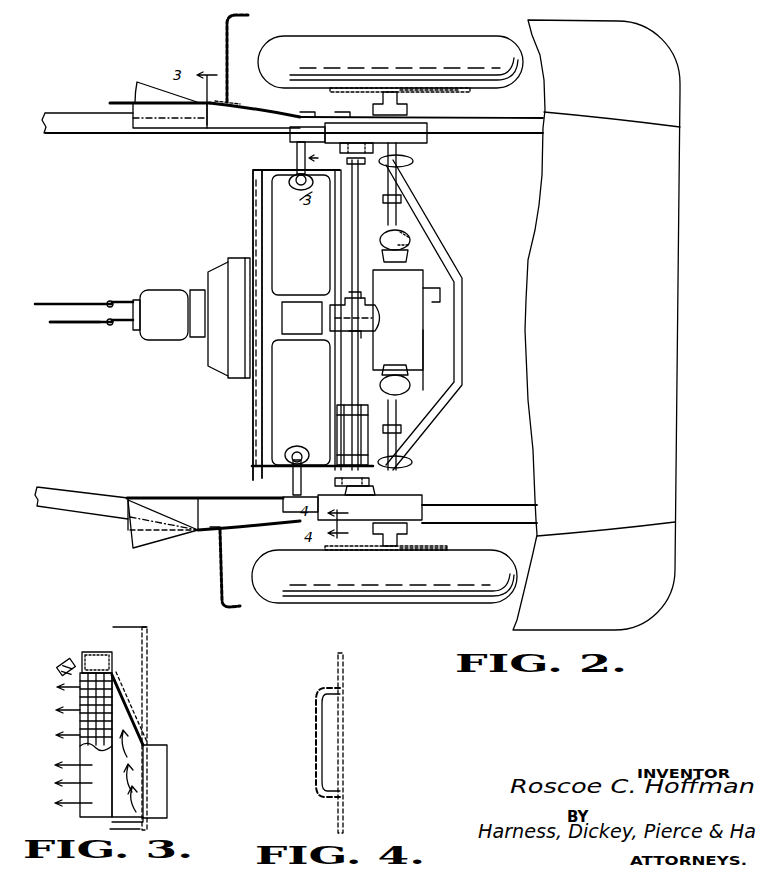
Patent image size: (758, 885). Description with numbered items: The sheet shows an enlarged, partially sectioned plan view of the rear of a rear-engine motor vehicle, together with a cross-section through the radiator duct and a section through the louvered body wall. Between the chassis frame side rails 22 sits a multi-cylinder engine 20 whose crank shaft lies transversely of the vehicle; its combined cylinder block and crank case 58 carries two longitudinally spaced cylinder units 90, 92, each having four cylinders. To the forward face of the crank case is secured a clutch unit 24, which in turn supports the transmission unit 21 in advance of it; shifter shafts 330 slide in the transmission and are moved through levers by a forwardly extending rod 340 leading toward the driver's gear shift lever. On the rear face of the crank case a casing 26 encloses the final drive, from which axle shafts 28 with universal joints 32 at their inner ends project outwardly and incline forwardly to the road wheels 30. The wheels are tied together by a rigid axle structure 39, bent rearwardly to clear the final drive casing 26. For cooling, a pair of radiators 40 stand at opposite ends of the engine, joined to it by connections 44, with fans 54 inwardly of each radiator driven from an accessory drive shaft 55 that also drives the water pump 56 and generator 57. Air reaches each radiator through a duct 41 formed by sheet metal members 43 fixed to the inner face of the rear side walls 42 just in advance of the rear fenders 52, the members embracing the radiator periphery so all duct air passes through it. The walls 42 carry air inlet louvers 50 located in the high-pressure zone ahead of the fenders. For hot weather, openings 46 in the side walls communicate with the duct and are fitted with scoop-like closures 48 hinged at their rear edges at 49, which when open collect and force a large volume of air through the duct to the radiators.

In FIG. 2, the engine 20 is at (279, 325).
In FIG. 2, the transmission unit 21 is at (166, 290).
In FIG. 2, the chassis frame side rails 22 is at (88, 132).
In FIG. 2, the clutch unit 24 is at (218, 362).
In FIG. 2, the casing 26 is at (410, 314).
In FIG. 2, the axle shafts 28 is at (400, 215).
In FIG. 2, the road wheels 30 is at (470, 44).
In FIG. 2, the universal joints 32 is at (410, 246).
In FIG. 2, the rigid axle structure 39 is at (458, 280).
In FIG. 2, the radiators 40 is at (420, 135).
In FIG. 3, the radiators 40 is at (92, 656).
In FIG. 2, the ducts 41 is at (196, 124).
In FIG. 3, the ducts 41 is at (148, 736).
In FIG. 2, the rear side walls 42 is at (124, 102).
In FIG. 3, the rear side walls 42 is at (148, 676).
In FIG. 4, the rear side walls 42 is at (344, 670).
In FIG. 2, the sheet metal members 43 is at (210, 126).
In FIG. 3, the sheet metal members 43 is at (130, 708).
In FIG. 2, the connections 44 is at (290, 158).
In FIG. 3, the connections 44 is at (58, 666).
In FIG. 2, the openings 46 is at (150, 128).
In FIG. 2, the scoop-like closures 48 is at (142, 90).
In FIG. 3, the scoop-like closures 48 is at (168, 806).
In FIG. 2, the hinge 49 is at (197, 111).
In FIG. 4, the air inlet louvers 50 is at (316, 772).
In FIG. 2, the rear fenders 52 is at (575, 34).
In FIG. 2, the fans 54 is at (415, 160).
In FIG. 2, the accessory drive shaft 55 is at (358, 222).
In FIG. 2, the water pump 56 is at (372, 318).
In FIG. 2, the generator 57 is at (340, 430).
In FIG. 2, the combined cylinder block and crank case 58 is at (262, 428).
In FIG. 2, the cylinder unit 90 is at (301, 235).
In FIG. 2, the cylinder unit 92 is at (301, 402).
In FIG. 2, the shifter shafts 330 is at (114, 304).
In FIG. 2, the rod 340 is at (90, 326).